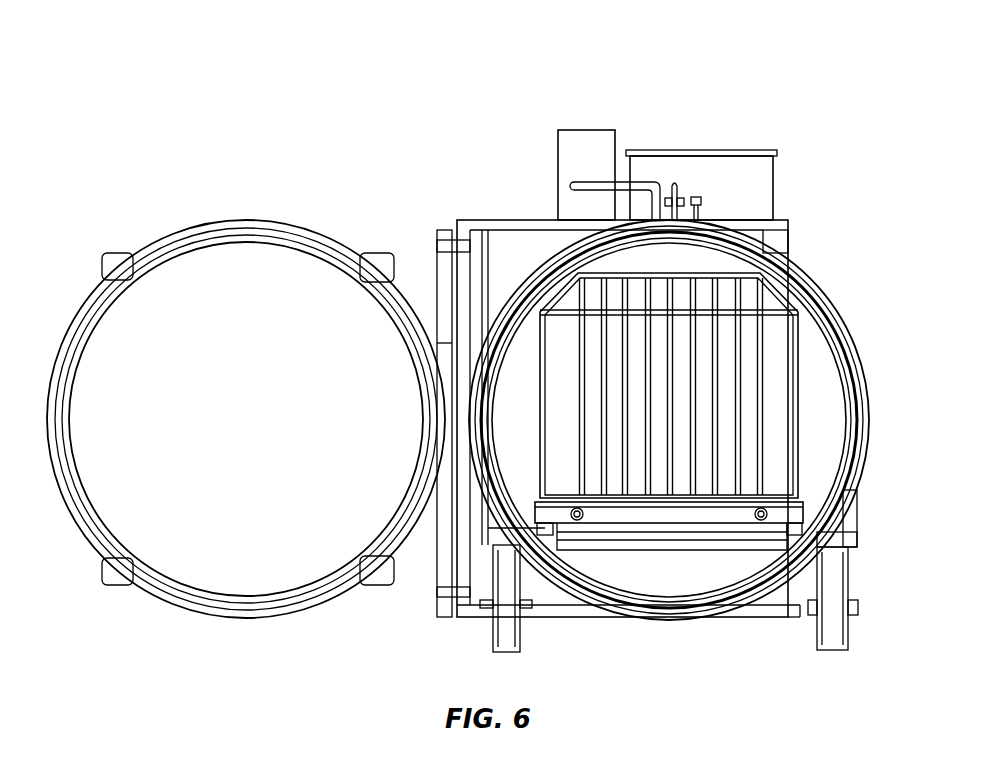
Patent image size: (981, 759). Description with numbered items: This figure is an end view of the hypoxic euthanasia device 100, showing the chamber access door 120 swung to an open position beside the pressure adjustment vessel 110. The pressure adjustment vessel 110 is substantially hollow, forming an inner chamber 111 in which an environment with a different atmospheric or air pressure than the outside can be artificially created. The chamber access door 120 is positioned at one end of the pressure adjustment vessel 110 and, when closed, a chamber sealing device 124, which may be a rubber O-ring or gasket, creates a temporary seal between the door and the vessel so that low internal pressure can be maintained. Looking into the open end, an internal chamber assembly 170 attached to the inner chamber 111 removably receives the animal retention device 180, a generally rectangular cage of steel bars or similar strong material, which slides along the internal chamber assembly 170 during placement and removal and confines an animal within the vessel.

The hypoxic euthanasia device 100 is at (786, 101).
The pressure adjustment vessel 110 is at (794, 262).
The inner chamber 111 is at (516, 445).
The chamber access door 120 is at (80, 312).
The chamber sealing device 124 is at (851, 363).
The internal chamber assembly 170 is at (801, 527).
The animal retention device 180 is at (786, 297).